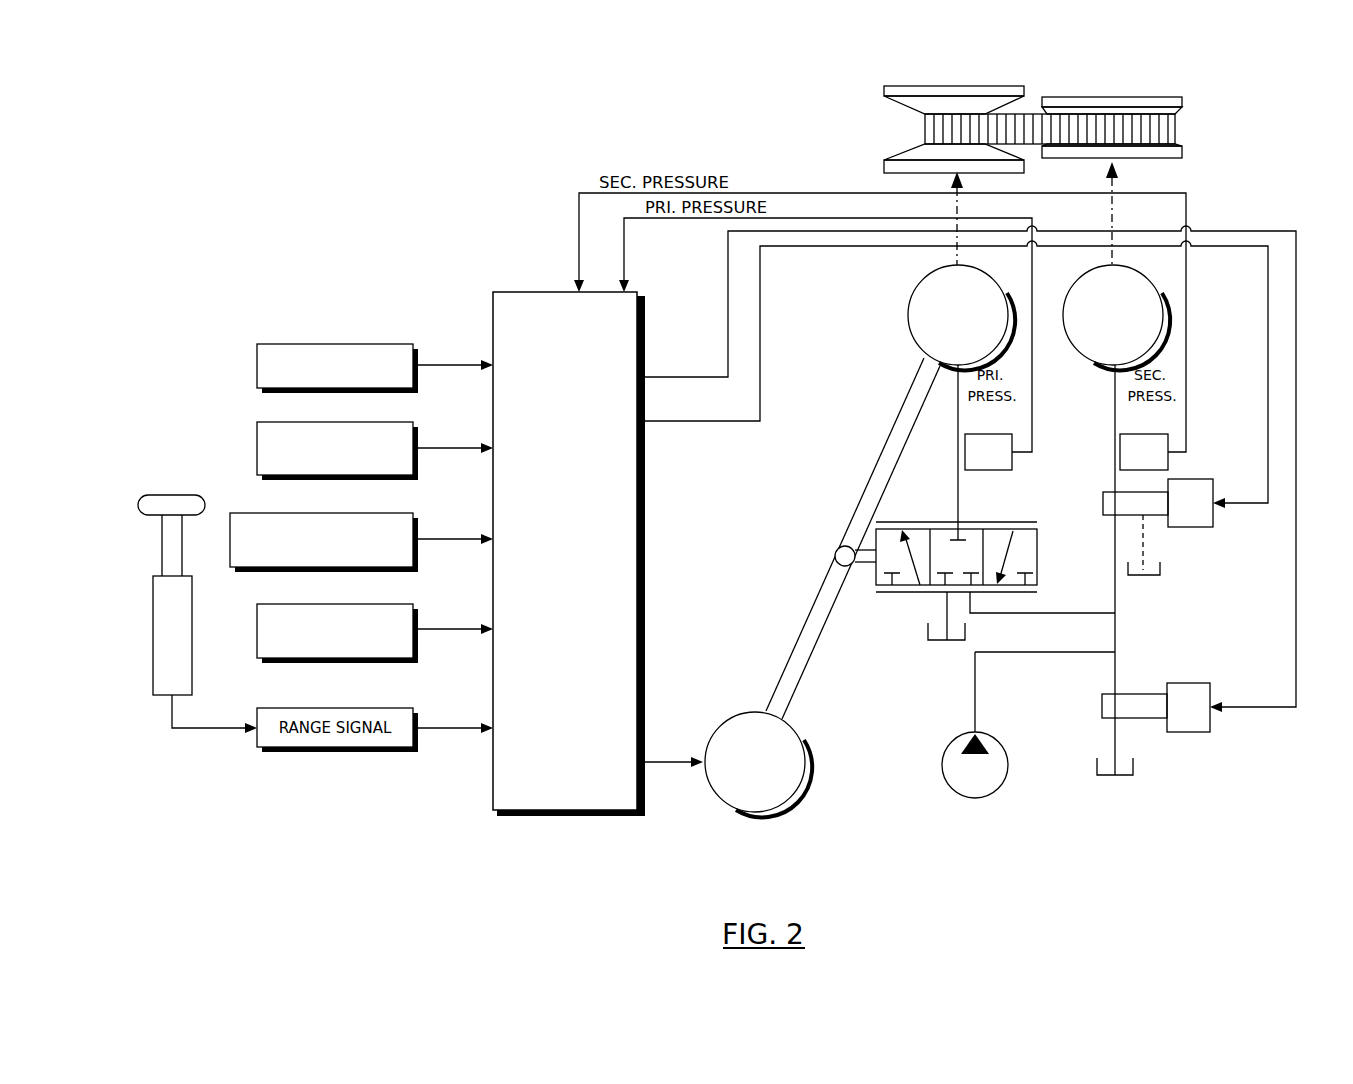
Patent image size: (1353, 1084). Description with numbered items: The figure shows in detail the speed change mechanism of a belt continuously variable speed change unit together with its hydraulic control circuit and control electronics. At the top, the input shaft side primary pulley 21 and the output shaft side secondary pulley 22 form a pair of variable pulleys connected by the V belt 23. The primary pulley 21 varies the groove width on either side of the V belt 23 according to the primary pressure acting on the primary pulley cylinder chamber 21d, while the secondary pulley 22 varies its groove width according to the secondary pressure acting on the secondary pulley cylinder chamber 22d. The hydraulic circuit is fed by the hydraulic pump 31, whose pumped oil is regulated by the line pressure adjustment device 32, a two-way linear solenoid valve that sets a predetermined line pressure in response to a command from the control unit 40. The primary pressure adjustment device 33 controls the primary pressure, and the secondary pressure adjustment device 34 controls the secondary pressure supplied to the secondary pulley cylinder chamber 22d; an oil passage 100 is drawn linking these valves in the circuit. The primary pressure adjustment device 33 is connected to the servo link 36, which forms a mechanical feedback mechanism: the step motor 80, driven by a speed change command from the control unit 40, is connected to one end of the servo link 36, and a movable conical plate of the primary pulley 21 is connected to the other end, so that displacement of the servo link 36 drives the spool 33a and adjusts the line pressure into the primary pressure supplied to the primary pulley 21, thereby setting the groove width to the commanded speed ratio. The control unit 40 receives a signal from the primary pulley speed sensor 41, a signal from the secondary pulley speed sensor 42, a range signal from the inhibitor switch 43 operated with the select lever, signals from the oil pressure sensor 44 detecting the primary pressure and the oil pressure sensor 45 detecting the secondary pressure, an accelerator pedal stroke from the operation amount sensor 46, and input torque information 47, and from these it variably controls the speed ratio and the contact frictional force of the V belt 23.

The primary pulley 21 is at (917, 86).
The secondary pulley 22 is at (1082, 97).
The V belt 23 is at (1176, 128).
The primary pulley cylinder chamber 21d is at (910, 316).
The secondary pulley cylinder chamber 22d is at (1066, 330).
The hydraulic pump 31 is at (1000, 790).
The line pressure adjustment device 32 is at (1140, 682).
The primary pressure adjustment device 33 is at (878, 606).
The spool 33a is at (1038, 548).
The secondary pressure adjustment device 34 is at (1158, 526).
The servo link 36 is at (815, 607).
The control unit 40 is at (547, 292).
The primary pulley speed sensor 41 is at (257, 437).
The secondary pulley speed sensor 42 is at (255, 513).
The inhibitor switch 43 is at (152, 665).
The oil pressure sensor 44 is at (975, 470).
The oil pressure sensor 45 is at (1130, 434).
The operation amount sensor 46 is at (257, 620).
The input torque information 47 is at (257, 347).
The step motor 80 is at (808, 770).
The oil passage line 100 is at (1115, 632).